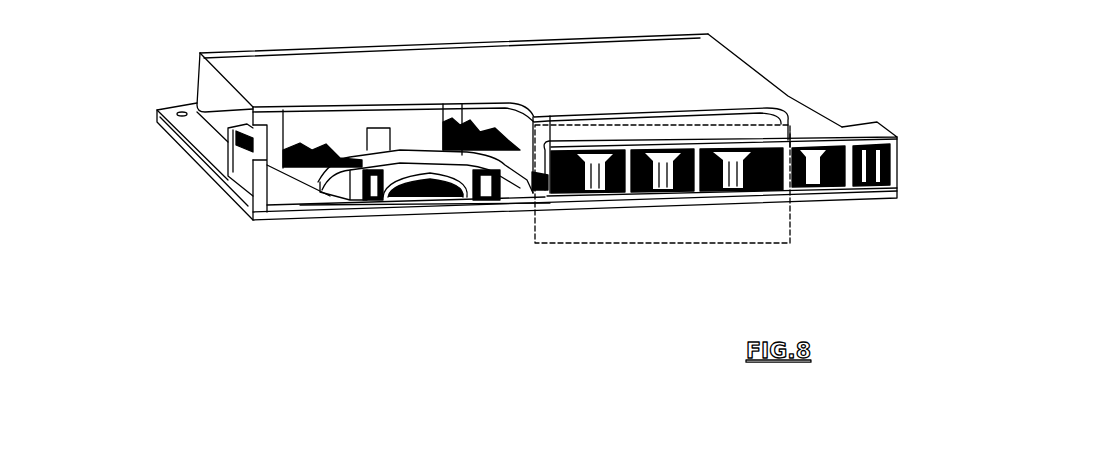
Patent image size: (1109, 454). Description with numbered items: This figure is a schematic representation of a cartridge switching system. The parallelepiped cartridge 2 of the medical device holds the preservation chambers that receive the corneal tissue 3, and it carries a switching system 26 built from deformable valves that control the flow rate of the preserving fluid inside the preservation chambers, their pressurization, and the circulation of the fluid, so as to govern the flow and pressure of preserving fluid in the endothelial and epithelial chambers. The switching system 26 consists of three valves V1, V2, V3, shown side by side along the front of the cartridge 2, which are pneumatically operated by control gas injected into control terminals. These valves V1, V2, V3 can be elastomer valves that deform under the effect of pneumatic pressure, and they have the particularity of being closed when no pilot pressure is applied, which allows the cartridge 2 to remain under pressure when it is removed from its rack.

The cartridge 2 is at (452, 44).
The corneal tissue 3 is at (462, 182).
The switching system 26 is at (790, 132).
The valve V1 is at (571, 186).
The valve V2 is at (634, 186).
The valve V3 is at (700, 185).